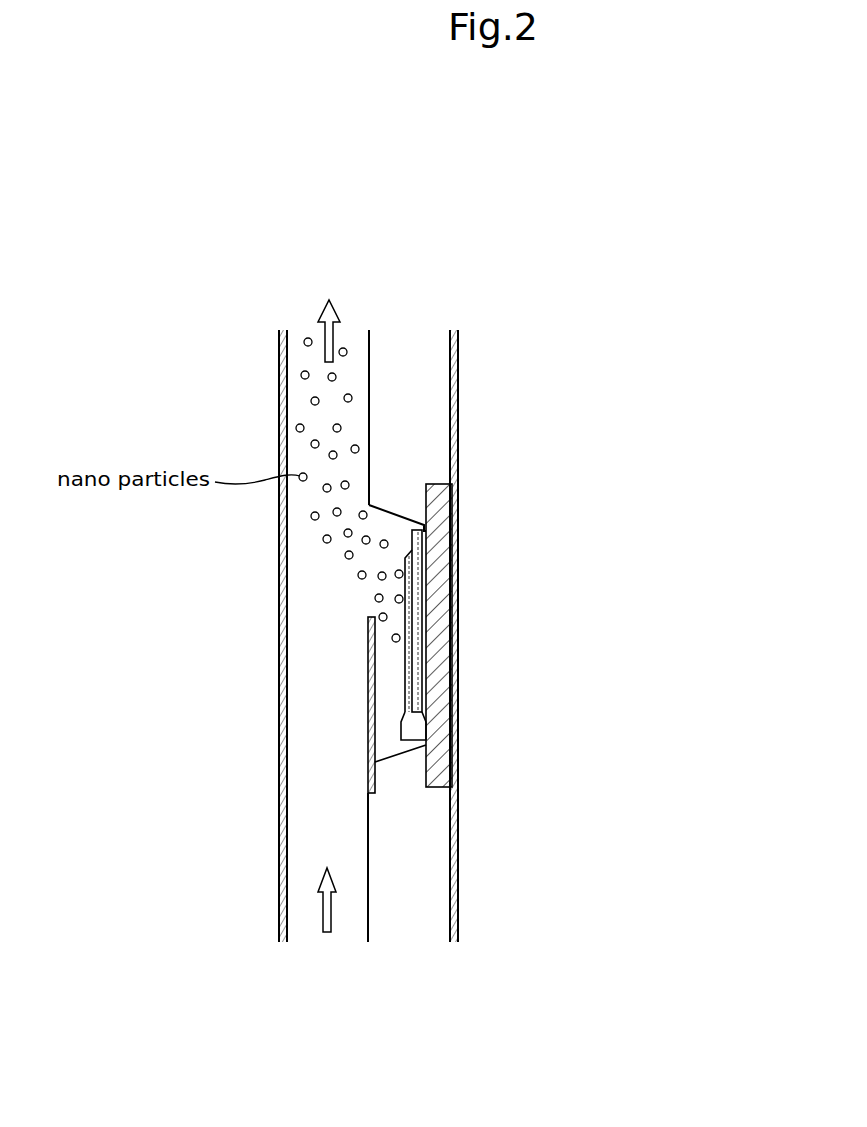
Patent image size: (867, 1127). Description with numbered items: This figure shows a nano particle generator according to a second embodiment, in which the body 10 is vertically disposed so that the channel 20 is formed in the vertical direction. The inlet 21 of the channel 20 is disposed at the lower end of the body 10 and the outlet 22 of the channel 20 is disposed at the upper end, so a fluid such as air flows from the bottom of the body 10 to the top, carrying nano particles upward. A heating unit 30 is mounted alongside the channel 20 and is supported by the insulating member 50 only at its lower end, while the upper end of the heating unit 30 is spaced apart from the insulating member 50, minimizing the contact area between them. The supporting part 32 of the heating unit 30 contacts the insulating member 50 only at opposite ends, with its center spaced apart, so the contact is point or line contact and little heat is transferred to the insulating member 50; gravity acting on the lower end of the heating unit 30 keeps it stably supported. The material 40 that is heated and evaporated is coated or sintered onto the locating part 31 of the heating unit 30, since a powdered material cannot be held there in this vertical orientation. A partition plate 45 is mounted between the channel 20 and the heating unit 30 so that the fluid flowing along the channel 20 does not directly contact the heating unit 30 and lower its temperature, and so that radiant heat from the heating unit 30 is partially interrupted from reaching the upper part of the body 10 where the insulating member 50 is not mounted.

The body 10 is at (278, 787).
The channel 20 is at (324, 720).
The inlet 21 is at (311, 934).
The outlet 22 is at (310, 318).
The heating unit 30 is at (415, 541).
The locating part 31 is at (412, 612).
The supporting part 32 is at (416, 730).
The material 40 is at (405, 680).
The partition plate 45 is at (375, 795).
The insulating member 50 is at (445, 642).